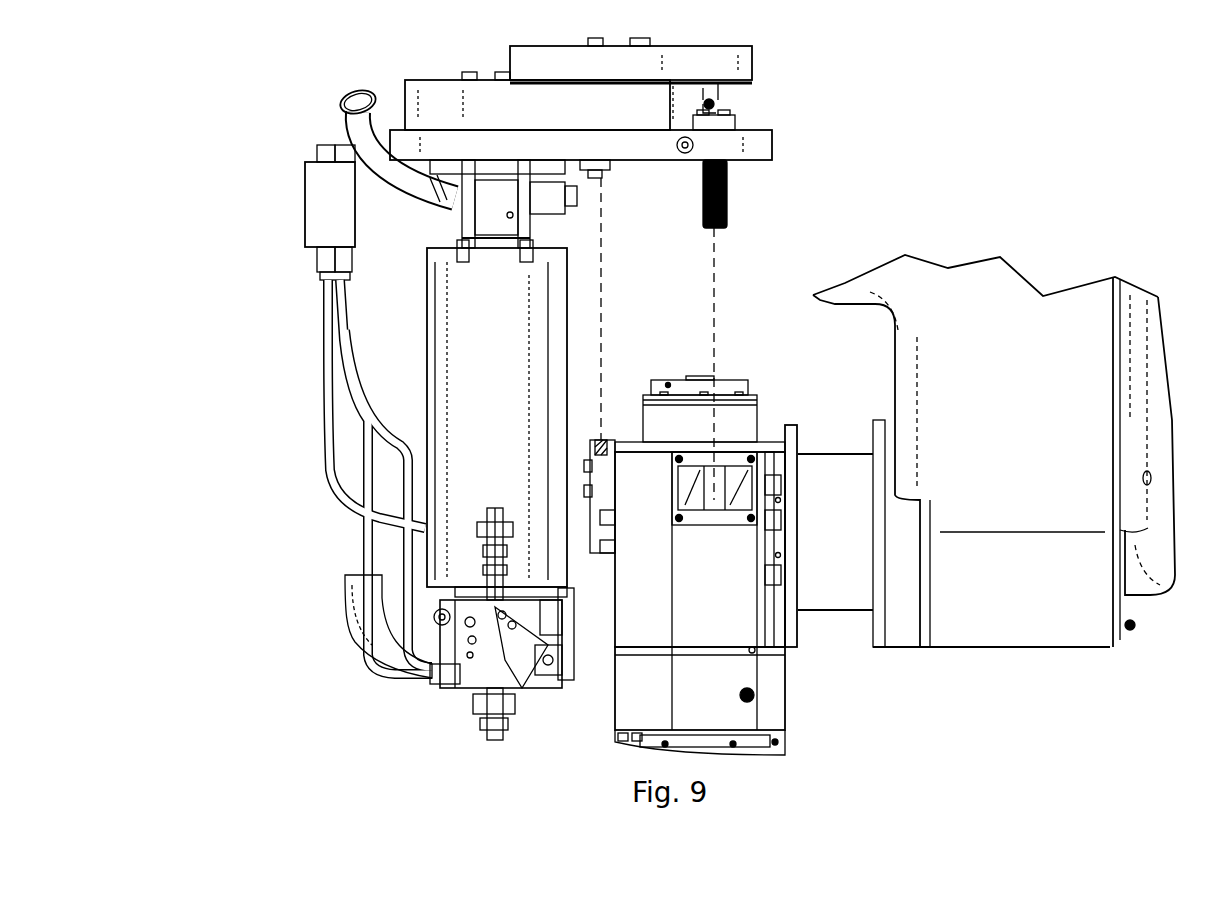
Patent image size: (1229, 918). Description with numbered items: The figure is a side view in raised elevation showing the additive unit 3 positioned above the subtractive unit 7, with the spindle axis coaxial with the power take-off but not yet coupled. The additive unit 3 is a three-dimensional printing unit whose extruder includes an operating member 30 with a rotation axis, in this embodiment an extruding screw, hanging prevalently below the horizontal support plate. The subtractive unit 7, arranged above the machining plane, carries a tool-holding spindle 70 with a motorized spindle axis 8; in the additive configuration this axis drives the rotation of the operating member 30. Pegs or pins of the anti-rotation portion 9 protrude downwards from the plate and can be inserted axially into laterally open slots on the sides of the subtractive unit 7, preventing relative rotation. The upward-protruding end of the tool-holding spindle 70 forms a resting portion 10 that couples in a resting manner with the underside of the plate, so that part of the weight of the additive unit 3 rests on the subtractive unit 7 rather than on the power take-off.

The additive unit 3 is at (432, 110).
The subtractive unit 7 is at (1036, 312).
The spindle axis 8 is at (723, 383).
The anti-rotation portion 9 is at (726, 190).
The resting portion 10 is at (610, 168).
The operating member 30 is at (460, 355).
The tool-holding spindle 70 is at (763, 700).